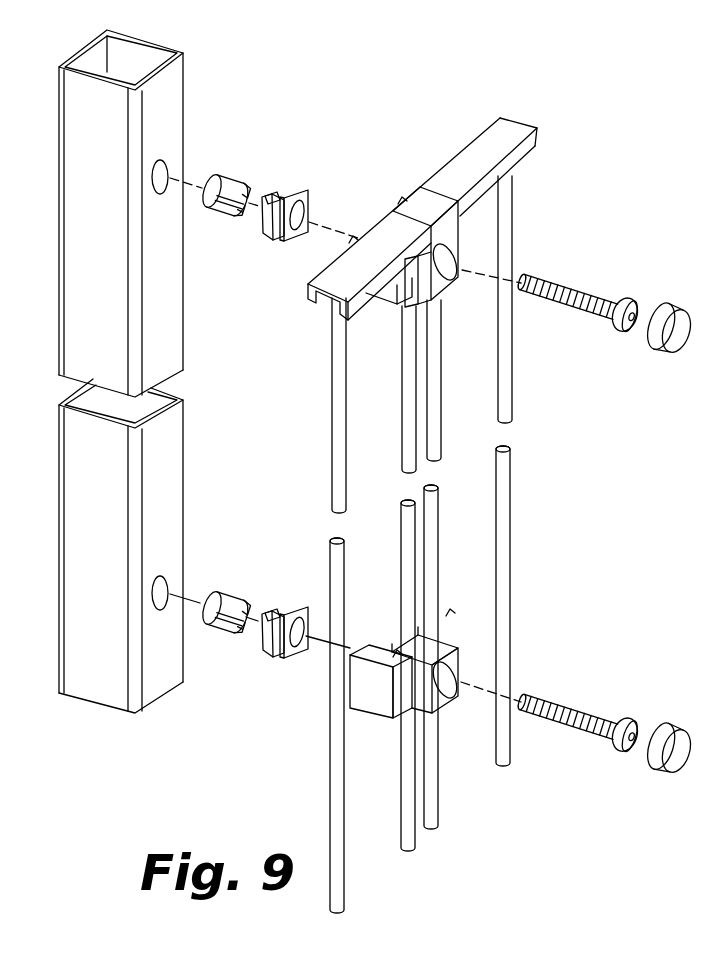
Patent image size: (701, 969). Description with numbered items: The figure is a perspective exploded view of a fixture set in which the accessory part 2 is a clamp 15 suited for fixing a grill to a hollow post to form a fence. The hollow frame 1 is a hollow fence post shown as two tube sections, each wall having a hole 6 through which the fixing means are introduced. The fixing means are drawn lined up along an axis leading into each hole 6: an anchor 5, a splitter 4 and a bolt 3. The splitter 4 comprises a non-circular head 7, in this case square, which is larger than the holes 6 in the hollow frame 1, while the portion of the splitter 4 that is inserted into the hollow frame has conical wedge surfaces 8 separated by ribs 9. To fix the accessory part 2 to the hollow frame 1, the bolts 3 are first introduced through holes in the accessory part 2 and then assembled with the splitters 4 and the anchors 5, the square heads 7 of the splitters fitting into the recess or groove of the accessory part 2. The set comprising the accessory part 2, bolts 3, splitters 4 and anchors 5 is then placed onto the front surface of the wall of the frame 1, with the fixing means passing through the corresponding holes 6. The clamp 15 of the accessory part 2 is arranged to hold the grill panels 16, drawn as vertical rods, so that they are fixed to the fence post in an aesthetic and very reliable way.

The hollow frame 1 is at (80, 163).
The accessory part 2 is at (452, 246).
The bolt 3 is at (585, 297).
The splitter 4 is at (278, 223).
The anchor 5 is at (213, 186).
The hole 6 is at (165, 171).
The non-circular head 7 is at (294, 232).
The conical wedge surfaces 8 is at (272, 199).
The rib 9 is at (283, 617).
The clamp 15 is at (386, 294).
The grill panel 16 is at (503, 380).